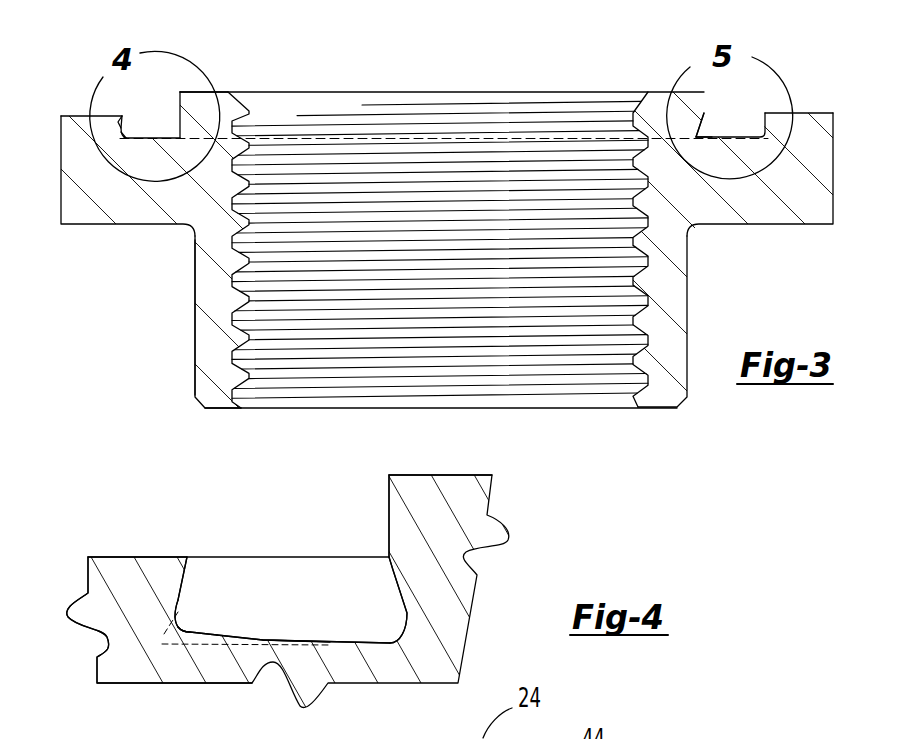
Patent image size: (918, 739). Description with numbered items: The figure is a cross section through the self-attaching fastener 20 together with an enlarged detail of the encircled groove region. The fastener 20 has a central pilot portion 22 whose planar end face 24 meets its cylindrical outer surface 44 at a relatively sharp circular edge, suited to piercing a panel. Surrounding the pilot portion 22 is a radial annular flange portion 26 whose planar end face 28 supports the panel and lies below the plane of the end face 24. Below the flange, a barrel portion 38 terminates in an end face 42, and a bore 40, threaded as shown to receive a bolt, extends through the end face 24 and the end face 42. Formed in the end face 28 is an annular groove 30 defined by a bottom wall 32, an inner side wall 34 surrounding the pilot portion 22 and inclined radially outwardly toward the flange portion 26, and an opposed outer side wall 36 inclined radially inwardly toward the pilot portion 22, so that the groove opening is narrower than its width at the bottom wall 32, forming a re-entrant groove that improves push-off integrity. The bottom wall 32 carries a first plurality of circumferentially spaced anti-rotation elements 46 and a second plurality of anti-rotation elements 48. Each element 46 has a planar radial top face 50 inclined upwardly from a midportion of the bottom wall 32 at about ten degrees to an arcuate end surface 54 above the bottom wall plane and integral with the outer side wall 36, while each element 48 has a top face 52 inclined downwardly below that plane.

In FIG. 3, the self-attaching fastener 20 is at (166, 270).
In FIG. 3, the central pilot portion 22 is at (207, 93).
In FIG. 4, the central pilot portion 22 is at (470, 575).
In FIG. 3, the end face of the pilot portion 24 is at (684, 91).
In FIG. 4, the end face of the pilot portion 24 is at (463, 475).
In FIG. 3, the radial annular flange portion 26 is at (807, 194).
In FIG. 4, the radial annular flange portion 26 is at (111, 590).
In FIG. 3, the end face of the flange portion 28 is at (809, 113).
In FIG. 4, the end face of the flange portion 28 is at (122, 556).
In FIG. 3, the annular groove 30 is at (752, 113).
In FIG. 4, the annular groove 30 is at (310, 565).
In FIG. 3, the bottom wall 32 is at (163, 135).
In FIG. 4, the bottom wall 32 is at (333, 641).
In FIG. 3, the inner side wall 34 is at (180, 146).
In FIG. 4, the inner side wall 34 is at (393, 585).
In FIG. 3, the outer side wall 36 is at (118, 126).
In FIG. 4, the outer side wall 36 is at (188, 577).
In FIG. 3, the barrel portion 38 is at (200, 328).
In FIG. 3, the bore 40 is at (568, 373).
In FIG. 3, the end face of the barrel portion 42 is at (225, 408).
In FIG. 3, the cylindrical outer surface 44 is at (178, 89).
In FIG. 4, the cylindrical outer surface 44 is at (388, 495).
In FIG. 3, the first plurality of circumferentially spaced anti-rotation elements 46 is at (125, 147).
In FIG. 4, the first plurality of circumferentially spaced anti-rotation elements 46 is at (180, 646).
In FIG. 3, the second plurality of circumferentially spaced anti-rotation elements 48 is at (704, 150).
In FIG. 3, the top face of the first anti-rotation elements 50 is at (122, 130).
In FIG. 4, the top face of the first anti-rotation elements 50 is at (227, 633).
In FIG. 3, the top face of the second anti-rotation elements 52 is at (697, 134).
In FIG. 4, the arcuate end surface 54 is at (178, 622).